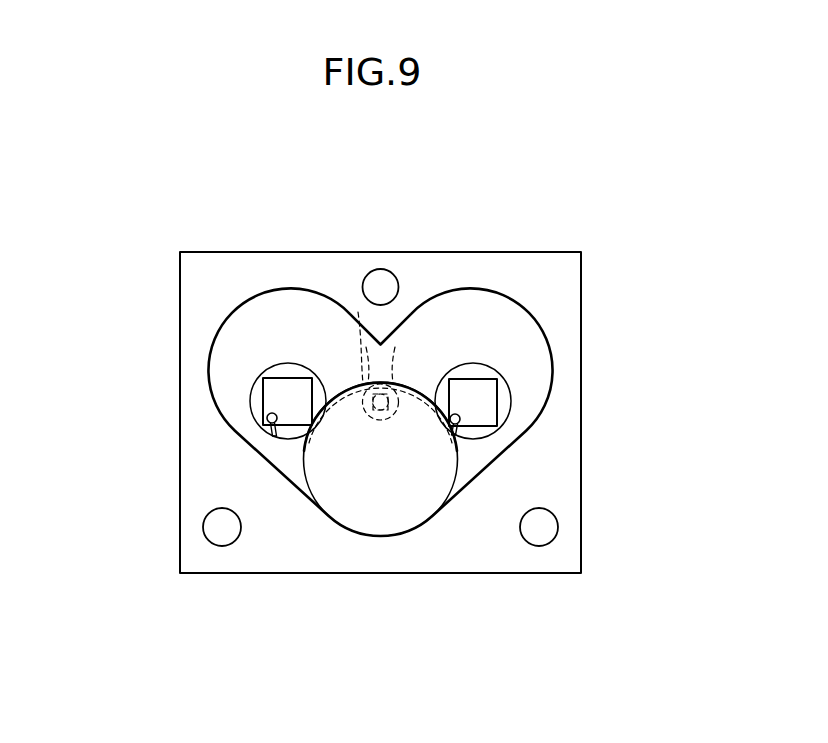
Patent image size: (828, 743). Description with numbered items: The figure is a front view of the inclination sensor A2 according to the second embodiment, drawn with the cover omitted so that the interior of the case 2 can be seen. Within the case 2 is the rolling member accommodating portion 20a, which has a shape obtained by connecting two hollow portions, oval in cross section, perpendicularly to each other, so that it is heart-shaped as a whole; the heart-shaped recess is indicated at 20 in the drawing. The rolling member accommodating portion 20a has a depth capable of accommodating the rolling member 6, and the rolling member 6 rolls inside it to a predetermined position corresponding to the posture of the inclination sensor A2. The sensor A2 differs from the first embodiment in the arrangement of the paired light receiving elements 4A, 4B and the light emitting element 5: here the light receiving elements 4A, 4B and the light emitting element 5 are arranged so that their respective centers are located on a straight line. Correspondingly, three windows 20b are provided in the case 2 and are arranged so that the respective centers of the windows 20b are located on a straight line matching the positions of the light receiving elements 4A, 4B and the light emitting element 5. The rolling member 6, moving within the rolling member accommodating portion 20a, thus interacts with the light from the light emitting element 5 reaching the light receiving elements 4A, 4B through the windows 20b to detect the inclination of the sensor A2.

The inclination sensor A2 is at (174, 303).
The case 2 is at (568, 337).
The opening (cutout) 20 is at (524, 421).
The rolling member accommodating portion 20a is at (258, 436).
The windows 20b is at (268, 372).
The light receiving element 4A is at (286, 388).
The light receiving element 4B is at (487, 386).
The light emitting element 5 is at (374, 412).
The rolling member 6 is at (393, 515).